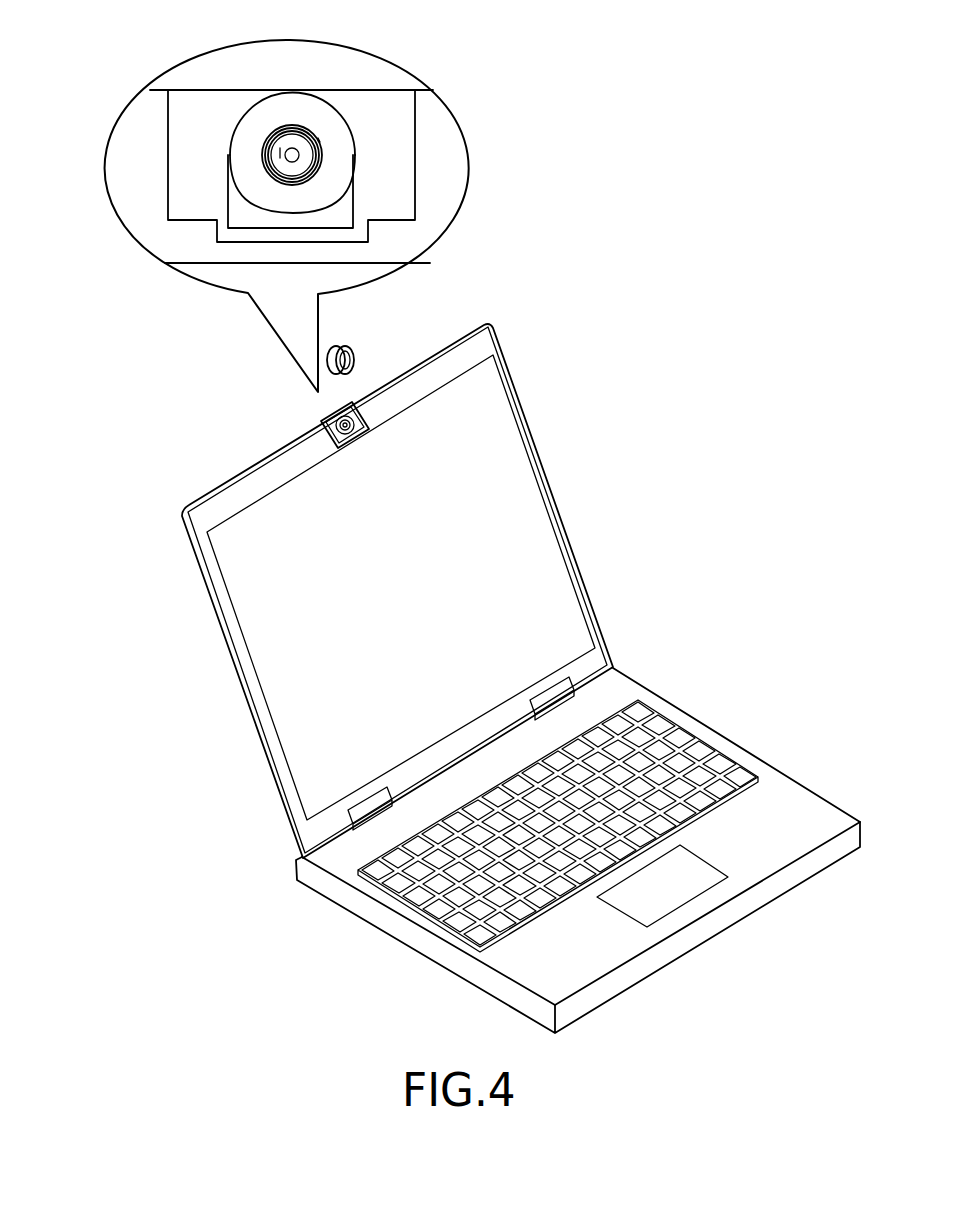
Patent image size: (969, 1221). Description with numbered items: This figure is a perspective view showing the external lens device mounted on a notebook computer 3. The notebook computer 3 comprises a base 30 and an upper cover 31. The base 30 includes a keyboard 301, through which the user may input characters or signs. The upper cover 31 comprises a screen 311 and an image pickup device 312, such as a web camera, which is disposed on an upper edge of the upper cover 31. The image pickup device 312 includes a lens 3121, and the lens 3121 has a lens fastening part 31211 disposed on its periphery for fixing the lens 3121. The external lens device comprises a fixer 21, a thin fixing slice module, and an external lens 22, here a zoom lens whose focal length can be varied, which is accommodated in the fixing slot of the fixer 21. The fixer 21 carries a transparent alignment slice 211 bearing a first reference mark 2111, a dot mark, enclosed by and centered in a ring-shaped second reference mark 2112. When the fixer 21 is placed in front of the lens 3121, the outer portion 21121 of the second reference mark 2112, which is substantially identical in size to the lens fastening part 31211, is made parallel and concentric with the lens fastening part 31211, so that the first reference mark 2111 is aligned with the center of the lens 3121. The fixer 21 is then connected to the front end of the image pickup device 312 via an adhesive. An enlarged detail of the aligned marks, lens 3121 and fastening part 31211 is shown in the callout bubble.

The notebook computer 3 is at (670, 570).
The base 30 is at (717, 732).
The keyboard 301 is at (455, 898).
The upper cover 31 is at (440, 147).
The screen 311 is at (508, 388).
The image pickup device 312 is at (393, 188).
The lens 3121 is at (280, 150).
The lens fastening part 31211 is at (318, 140).
The fixer 21 is at (225, 175).
The alignment slice 211 is at (250, 143).
The first reference mark 2111 is at (293, 148).
The second reference mark 2112 is at (275, 128).
The outer portion 21121 is at (272, 173).
The external lens 22 is at (352, 343).